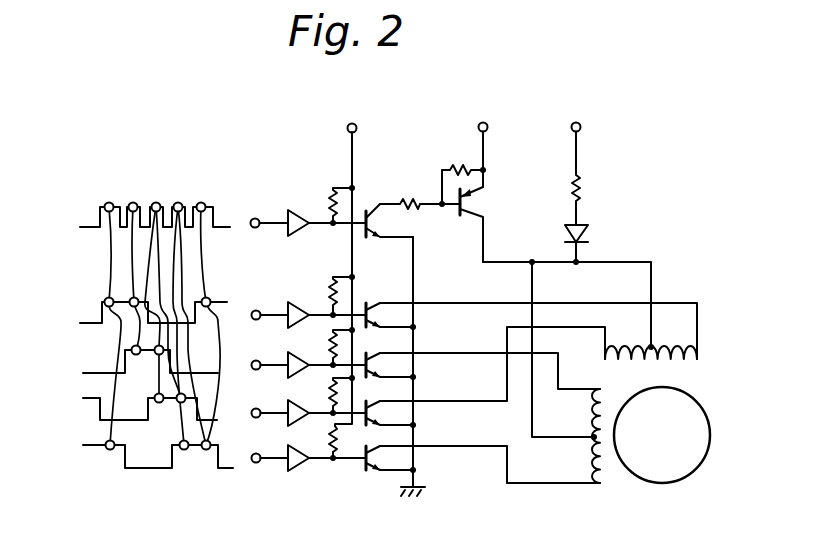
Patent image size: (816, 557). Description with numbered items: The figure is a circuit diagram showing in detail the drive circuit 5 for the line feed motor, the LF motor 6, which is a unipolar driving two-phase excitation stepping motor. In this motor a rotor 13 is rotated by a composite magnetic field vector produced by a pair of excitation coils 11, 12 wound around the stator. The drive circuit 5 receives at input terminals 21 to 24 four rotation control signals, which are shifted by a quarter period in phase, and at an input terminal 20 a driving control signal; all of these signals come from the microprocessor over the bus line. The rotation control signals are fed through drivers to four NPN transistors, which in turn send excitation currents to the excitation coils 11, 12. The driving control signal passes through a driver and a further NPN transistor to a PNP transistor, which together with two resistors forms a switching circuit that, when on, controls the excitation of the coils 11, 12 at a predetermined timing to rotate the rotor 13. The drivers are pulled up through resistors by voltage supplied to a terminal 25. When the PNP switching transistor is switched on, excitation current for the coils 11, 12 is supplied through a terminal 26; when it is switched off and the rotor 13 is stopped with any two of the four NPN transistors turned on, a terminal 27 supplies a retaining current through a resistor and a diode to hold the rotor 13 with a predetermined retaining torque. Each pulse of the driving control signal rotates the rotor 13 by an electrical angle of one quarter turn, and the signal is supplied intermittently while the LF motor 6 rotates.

The drive circuit 5 is at (293, 155).
The LF motor 6 is at (672, 458).
The excitation coil 11 is at (690, 363).
The excitation coil 12 is at (598, 484).
The rotor 13 is at (663, 484).
The input terminal 20 is at (255, 218).
The input terminal 21 is at (253, 311).
The input terminal 22 is at (253, 361).
The input terminal 23 is at (253, 409).
The input terminal 24 is at (253, 455).
The terminal 25 is at (352, 123).
The terminal 26 is at (483, 122).
The terminal 27 is at (576, 122).